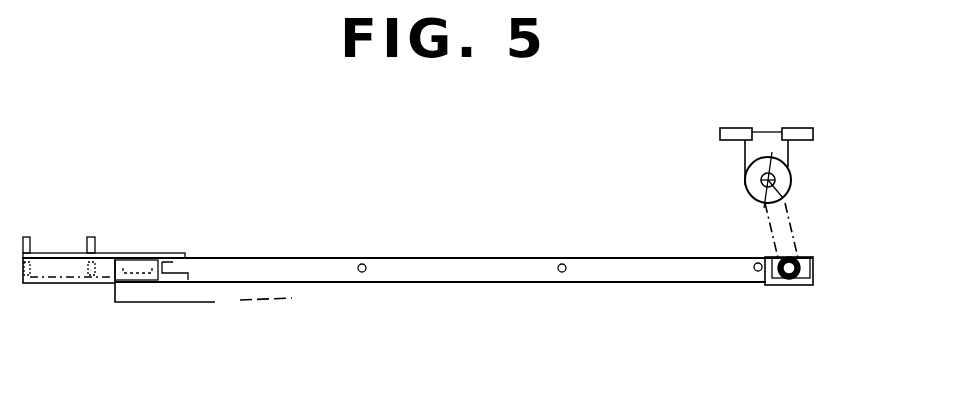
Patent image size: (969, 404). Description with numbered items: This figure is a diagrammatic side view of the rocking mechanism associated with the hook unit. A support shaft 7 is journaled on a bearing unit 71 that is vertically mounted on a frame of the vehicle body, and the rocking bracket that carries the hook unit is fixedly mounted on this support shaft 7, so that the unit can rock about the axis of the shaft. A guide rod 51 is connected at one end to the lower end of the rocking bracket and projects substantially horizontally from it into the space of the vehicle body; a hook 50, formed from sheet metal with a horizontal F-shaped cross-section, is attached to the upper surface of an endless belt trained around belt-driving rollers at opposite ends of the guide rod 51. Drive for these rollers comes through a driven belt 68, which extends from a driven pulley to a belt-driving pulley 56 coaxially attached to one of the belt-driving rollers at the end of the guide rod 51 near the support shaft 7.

The hook 50 is at (63, 253).
The guide rod 51 is at (170, 290).
The belt-driving pulley 56 is at (783, 285).
The driven belt 68 is at (793, 235).
The support shaft 7 is at (771, 182).
The bearing unit 71 is at (778, 150).